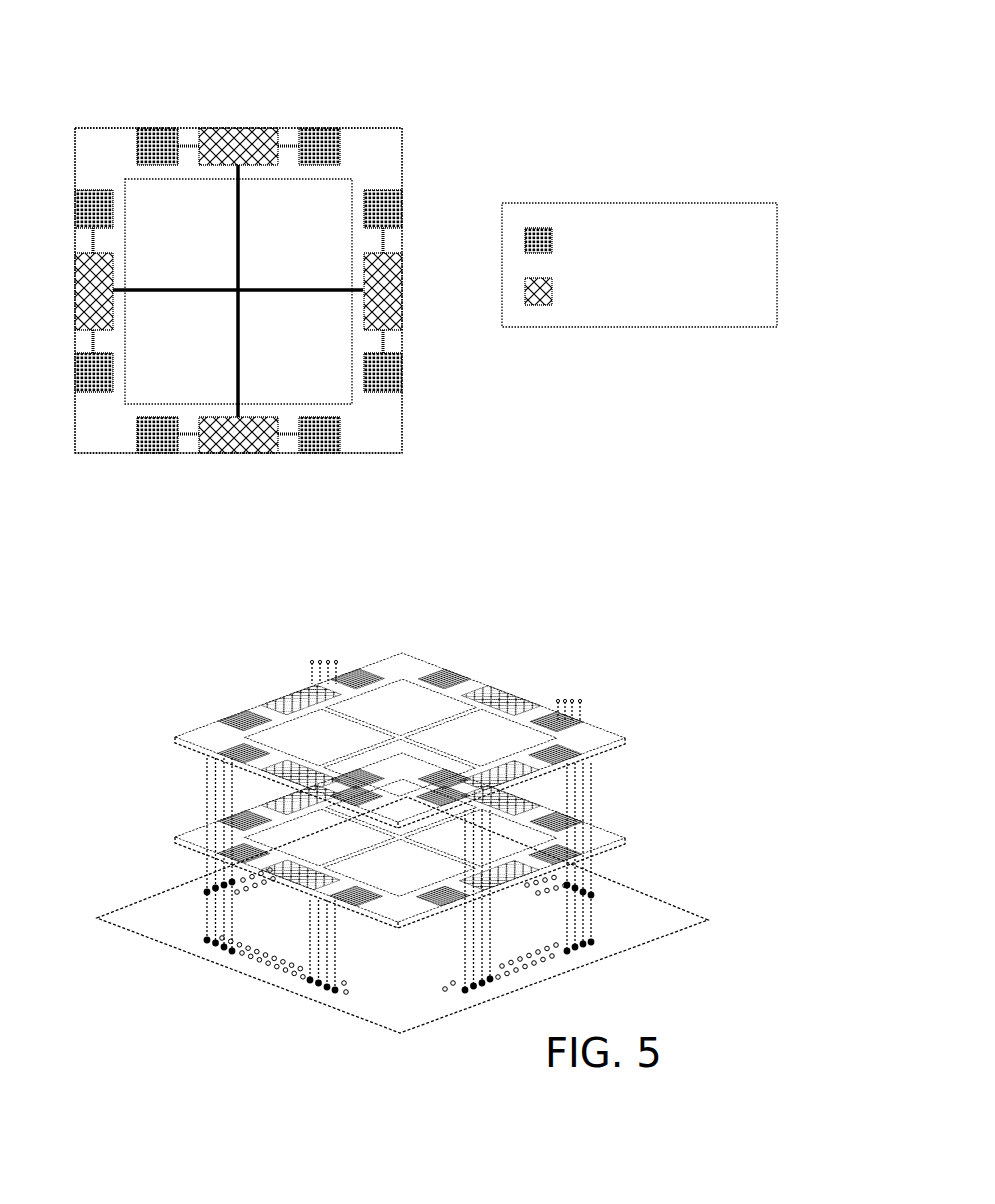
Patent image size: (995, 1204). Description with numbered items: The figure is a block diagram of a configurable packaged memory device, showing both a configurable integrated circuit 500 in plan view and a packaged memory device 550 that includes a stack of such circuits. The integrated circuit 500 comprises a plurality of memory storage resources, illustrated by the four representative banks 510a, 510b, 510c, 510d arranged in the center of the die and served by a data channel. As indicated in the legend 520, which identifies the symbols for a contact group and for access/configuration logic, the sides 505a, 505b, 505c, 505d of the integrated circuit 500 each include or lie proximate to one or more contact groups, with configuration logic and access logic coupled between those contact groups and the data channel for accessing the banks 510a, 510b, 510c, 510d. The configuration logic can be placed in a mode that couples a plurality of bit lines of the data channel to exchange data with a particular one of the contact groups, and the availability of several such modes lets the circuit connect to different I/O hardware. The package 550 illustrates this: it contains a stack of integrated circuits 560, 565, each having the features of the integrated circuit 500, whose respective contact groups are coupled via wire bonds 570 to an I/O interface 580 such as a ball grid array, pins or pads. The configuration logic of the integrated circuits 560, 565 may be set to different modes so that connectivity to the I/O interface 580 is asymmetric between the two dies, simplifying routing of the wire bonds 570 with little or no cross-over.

The integrated circuit 500 is at (250, 69).
The side 505a is at (71, 151).
The side 505b is at (379, 125).
The side 505c is at (98, 459).
The side 505d is at (406, 431).
The bank 510a is at (160, 256).
The bank 510b is at (274, 256).
The bank 510c is at (160, 372).
The bank 510d is at (274, 372).
The legend 520 is at (761, 200).
The packaged memory device 550 is at (162, 667).
The integrated circuit 560 is at (595, 737).
The integrated circuit 565 is at (595, 837).
The wire bonds 570 is at (203, 805).
The I/O interface 580 is at (169, 914).